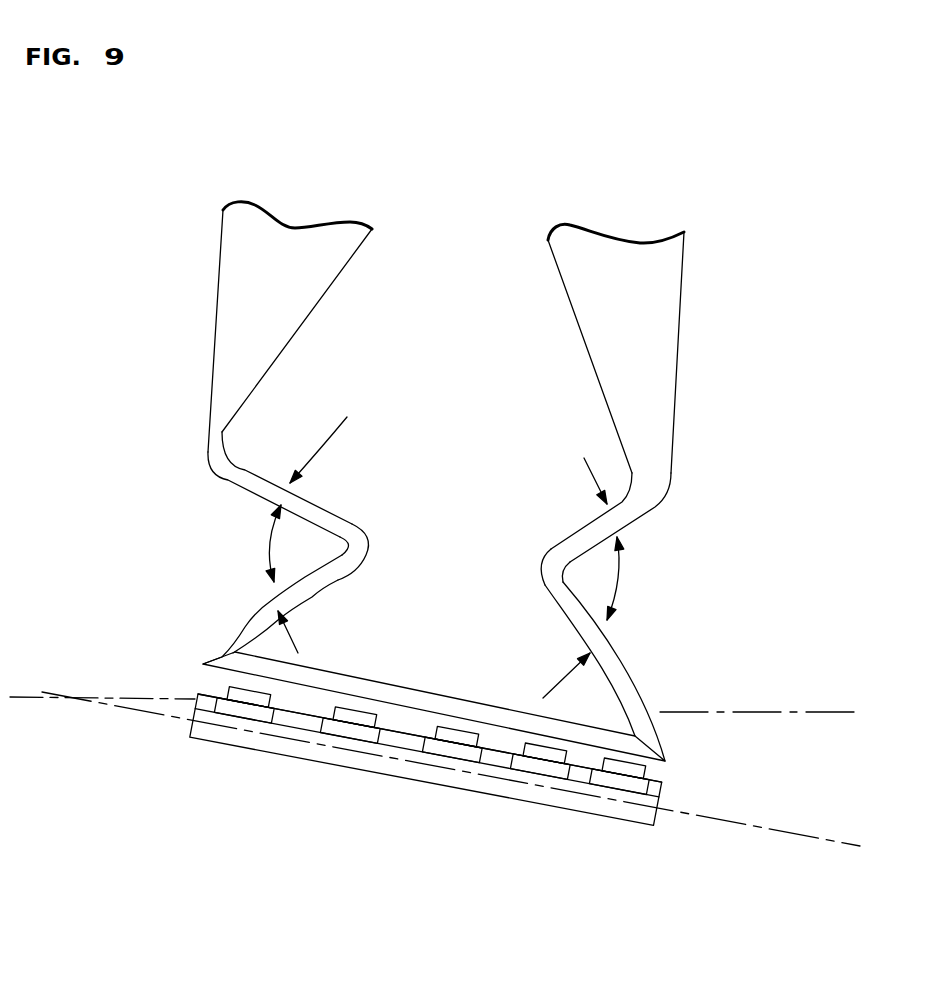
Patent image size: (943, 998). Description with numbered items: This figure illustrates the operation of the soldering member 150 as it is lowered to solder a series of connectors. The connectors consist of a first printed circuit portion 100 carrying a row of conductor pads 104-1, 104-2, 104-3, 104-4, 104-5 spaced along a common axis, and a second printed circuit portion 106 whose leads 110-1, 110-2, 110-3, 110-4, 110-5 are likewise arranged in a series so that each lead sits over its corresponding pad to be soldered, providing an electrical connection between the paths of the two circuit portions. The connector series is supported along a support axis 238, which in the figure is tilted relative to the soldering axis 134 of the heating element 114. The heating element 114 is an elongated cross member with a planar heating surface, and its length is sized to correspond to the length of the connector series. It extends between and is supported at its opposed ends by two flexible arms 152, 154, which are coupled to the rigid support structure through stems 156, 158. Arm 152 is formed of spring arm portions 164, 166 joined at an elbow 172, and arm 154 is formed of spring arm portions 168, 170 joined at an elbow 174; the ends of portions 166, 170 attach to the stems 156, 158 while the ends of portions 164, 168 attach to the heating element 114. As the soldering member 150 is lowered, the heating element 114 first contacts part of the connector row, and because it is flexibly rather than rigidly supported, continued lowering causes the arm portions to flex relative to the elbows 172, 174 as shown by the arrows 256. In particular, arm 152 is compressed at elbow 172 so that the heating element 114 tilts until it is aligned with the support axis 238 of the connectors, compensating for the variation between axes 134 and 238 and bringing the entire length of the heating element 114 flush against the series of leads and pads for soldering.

The soldering member 150 is at (742, 110).
The arm 152 is at (233, 590).
The arm 154 is at (662, 638).
The stem 156 is at (263, 240).
The stem 158 is at (618, 265).
The spring arm portion 164 is at (310, 587).
The spring arm portion 166 is at (248, 468).
The spring arm portion 168 is at (574, 623).
The spring arm portion 170 is at (580, 528).
The elbow 172 is at (360, 540).
The elbow 174 is at (547, 563).
The arrows 256 is at (323, 433).
The heating element 114 is at (345, 678).
The first printed circuit portion 100 is at (293, 752).
The second printed circuit portion 106 is at (200, 695).
The lead 110-1 is at (248, 683).
The lead 110-2 is at (353, 712).
The lead 110-3 is at (455, 722).
The lead 110-4 is at (543, 745).
The lead 110-5 is at (627, 763).
The conductor pad 104-1 is at (241, 712).
The conductor pad 104-2 is at (353, 738).
The conductor pad 104-3 is at (452, 750).
The conductor pad 104-4 is at (540, 765).
The conductor pad 104-5 is at (615, 780).
The soldering axis 134 is at (434, 693).
The support axis 238 is at (451, 769).